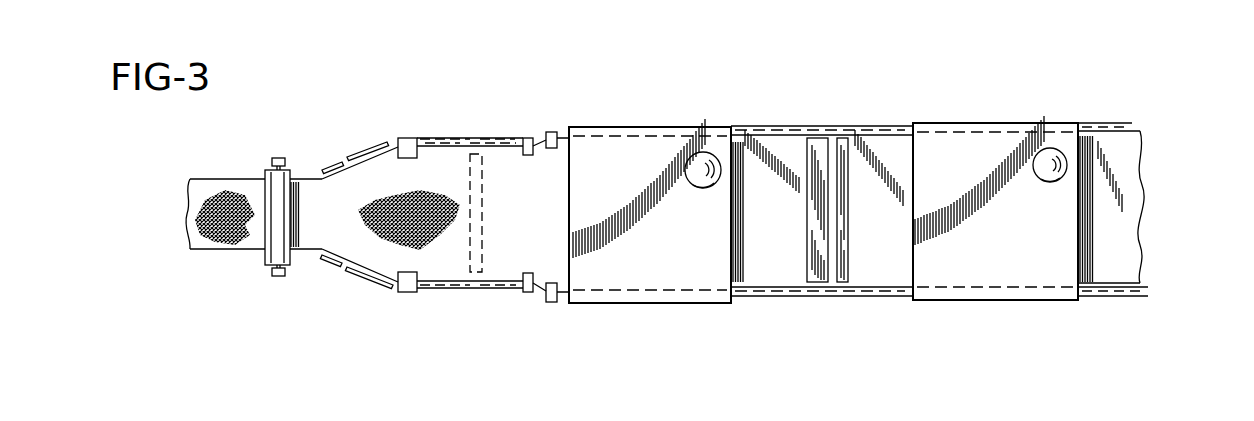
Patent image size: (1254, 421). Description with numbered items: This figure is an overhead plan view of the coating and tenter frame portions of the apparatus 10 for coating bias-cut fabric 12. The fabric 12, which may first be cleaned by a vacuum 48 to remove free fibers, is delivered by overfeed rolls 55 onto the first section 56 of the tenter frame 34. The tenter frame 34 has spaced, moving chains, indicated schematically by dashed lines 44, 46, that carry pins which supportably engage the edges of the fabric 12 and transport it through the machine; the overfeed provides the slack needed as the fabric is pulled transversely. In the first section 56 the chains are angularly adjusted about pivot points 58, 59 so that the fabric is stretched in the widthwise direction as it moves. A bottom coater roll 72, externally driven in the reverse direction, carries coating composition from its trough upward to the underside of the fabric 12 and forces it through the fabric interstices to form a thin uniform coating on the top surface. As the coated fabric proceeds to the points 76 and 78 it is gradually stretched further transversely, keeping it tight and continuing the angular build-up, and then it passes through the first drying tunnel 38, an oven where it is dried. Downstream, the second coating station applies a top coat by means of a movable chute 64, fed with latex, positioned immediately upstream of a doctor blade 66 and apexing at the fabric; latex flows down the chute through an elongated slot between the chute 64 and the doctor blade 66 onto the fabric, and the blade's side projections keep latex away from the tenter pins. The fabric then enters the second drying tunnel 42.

The exhaust pipe 10 is at (1123, 214).
The bias-cut fabric 12 is at (205, 190).
The tenter frame 34 is at (432, 132).
The first drying tunnel 38 is at (640, 150).
The second drying tunnel 42 is at (997, 152).
The traveling chain 44 is at (355, 152).
The traveling chain 46 is at (352, 273).
The vacuum 48 is at (796, 127).
The overfeed rolls 55 is at (278, 157).
The first section 56 is at (333, 153).
The pivot point 58 is at (407, 138).
The pivot point 59 is at (407, 292).
The movable chute 64 is at (808, 246).
The doctor blade 66 is at (846, 258).
The roll 72 is at (470, 213).
The point 76 is at (527, 294).
The point 78 is at (553, 303).